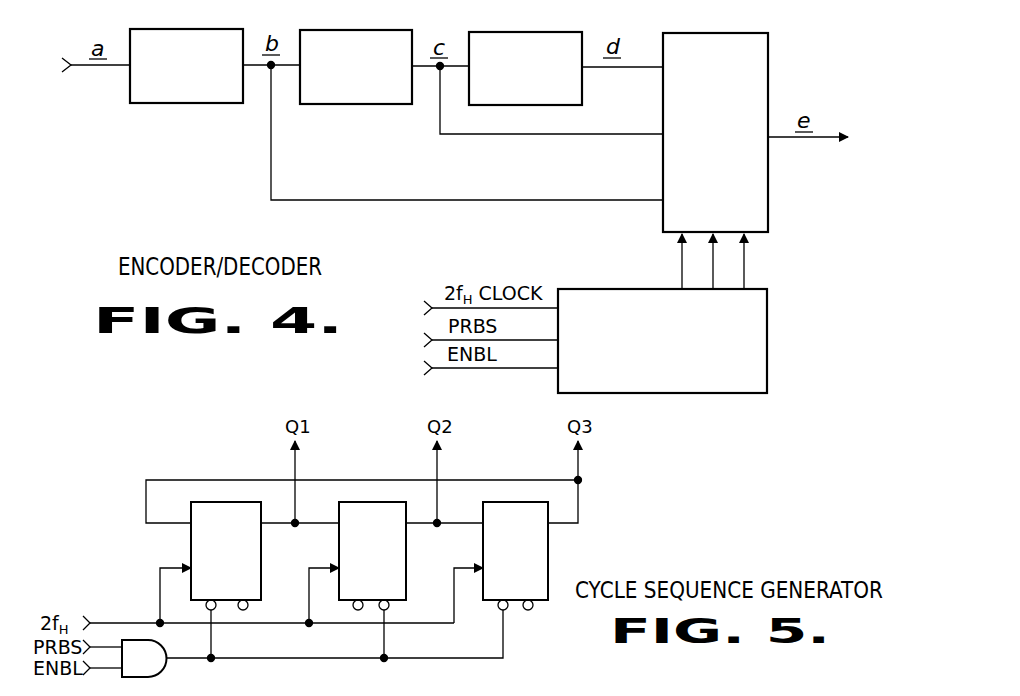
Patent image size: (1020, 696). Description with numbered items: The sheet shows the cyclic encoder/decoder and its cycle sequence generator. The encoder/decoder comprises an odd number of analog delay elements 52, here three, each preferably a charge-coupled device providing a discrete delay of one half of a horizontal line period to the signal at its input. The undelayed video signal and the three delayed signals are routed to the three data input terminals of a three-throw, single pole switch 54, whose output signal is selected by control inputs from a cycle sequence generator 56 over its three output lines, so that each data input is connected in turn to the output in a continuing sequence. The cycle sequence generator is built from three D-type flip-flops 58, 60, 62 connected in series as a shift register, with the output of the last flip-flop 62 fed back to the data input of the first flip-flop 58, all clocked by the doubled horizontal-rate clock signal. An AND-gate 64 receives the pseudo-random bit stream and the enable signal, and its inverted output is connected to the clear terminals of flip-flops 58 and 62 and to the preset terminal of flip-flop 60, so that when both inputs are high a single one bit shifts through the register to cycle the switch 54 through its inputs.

In FIG. 4, the analog delay element 52 is at (196, 29).
In FIG. 4, the three-throw, single pole switch 54 is at (768, 37).
In FIG. 4, the cycle sequence generator 56 is at (767, 323).
In FIG. 5, the first D-type flip-flop 58 is at (261, 548).
In FIG. 5, the D-type flip-flop 60 is at (406, 548).
In FIG. 5, the last D-type flip-flop 62 is at (548, 548).
In FIG. 5, the AND-gate 64 is at (163, 675).